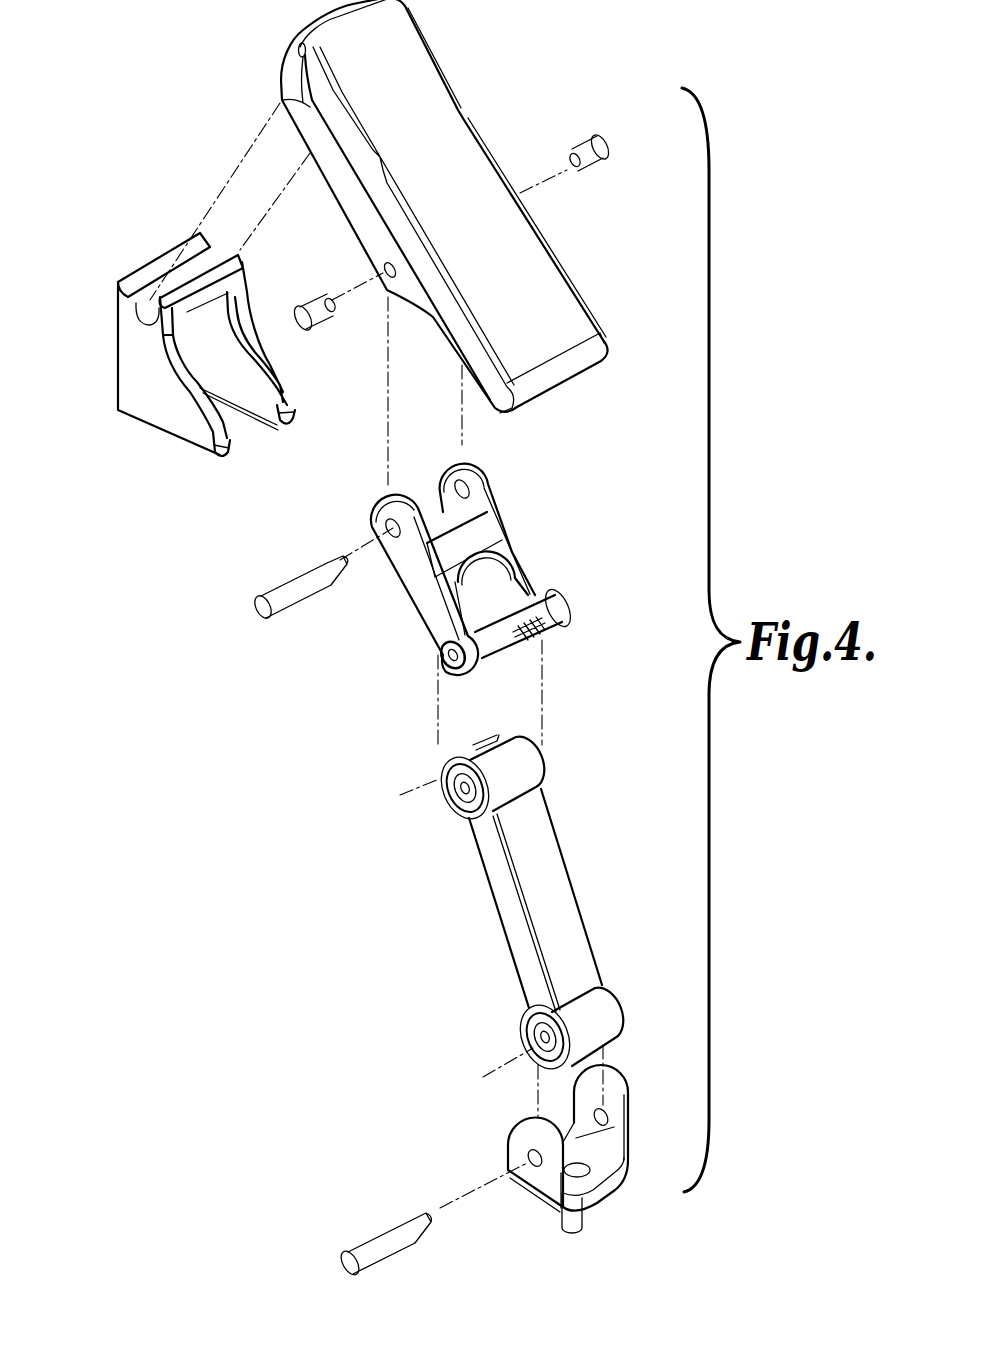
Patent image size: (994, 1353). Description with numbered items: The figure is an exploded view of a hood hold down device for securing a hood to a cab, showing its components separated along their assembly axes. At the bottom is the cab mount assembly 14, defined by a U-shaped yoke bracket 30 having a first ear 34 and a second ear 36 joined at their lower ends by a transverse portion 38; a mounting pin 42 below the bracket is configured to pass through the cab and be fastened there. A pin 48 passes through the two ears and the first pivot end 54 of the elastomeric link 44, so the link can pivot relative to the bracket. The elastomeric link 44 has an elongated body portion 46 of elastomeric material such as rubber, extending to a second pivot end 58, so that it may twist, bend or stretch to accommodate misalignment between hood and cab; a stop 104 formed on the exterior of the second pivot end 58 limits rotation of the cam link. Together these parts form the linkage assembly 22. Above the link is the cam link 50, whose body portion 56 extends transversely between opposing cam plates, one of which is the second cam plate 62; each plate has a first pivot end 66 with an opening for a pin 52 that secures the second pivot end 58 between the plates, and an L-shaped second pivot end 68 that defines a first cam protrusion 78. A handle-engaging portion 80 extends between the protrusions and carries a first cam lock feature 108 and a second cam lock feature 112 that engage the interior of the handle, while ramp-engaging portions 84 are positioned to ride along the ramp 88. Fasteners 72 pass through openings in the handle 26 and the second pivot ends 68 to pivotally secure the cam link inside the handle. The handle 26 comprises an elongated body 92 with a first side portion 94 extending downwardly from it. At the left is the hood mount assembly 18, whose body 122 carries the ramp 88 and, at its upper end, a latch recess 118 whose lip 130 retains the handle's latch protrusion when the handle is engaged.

The cab mount assembly 14 is at (510, 1164).
The hood mount assembly 18 is at (202, 307).
The linkage assembly 22 is at (412, 858).
The handle 26 is at (426, 206).
The yoke bracket 30 is at (568, 1164).
The first ear 34 is at (615, 1088).
The second ear 36 is at (515, 1135).
The transverse portion 38 is at (588, 1185).
The mounting pin 42 is at (572, 1232).
The elastomeric link 44 is at (500, 902).
The elongated body portion 46 is at (565, 912).
The pin 48 is at (378, 1242).
The cam link 50 is at (436, 521).
The pin 52 is at (280, 590).
The first pivot end 54 is at (610, 1005).
The body portion 56 is at (490, 527).
The second pivot end 58 is at (516, 756).
The second cam plate 62 is at (425, 597).
The first pivot end 66 is at (432, 542).
The second pivot end 68 is at (582, 615).
The fastener 72 is at (310, 330).
The first cam protrusion 78 is at (472, 678).
The handle-engaging portion 80 is at (545, 617).
The ramp-engaging portion 84 is at (470, 460).
The ramp 88 is at (280, 393).
The elongated body 92 is at (418, 88).
The first side portion 94 is at (332, 167).
The stop 104 is at (480, 740).
The first cam lock feature 108 is at (540, 637).
The second cam lock feature 112 is at (515, 595).
The latch recess 118 is at (118, 317).
The body 122 is at (147, 367).
The lip 130 is at (245, 255).